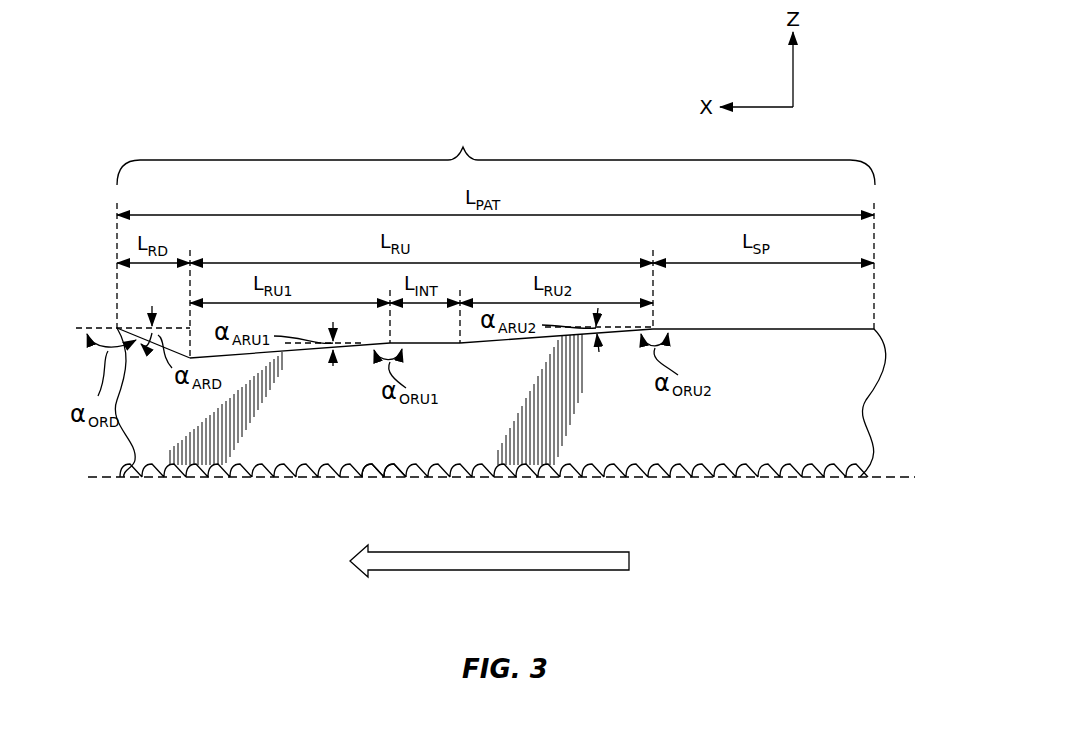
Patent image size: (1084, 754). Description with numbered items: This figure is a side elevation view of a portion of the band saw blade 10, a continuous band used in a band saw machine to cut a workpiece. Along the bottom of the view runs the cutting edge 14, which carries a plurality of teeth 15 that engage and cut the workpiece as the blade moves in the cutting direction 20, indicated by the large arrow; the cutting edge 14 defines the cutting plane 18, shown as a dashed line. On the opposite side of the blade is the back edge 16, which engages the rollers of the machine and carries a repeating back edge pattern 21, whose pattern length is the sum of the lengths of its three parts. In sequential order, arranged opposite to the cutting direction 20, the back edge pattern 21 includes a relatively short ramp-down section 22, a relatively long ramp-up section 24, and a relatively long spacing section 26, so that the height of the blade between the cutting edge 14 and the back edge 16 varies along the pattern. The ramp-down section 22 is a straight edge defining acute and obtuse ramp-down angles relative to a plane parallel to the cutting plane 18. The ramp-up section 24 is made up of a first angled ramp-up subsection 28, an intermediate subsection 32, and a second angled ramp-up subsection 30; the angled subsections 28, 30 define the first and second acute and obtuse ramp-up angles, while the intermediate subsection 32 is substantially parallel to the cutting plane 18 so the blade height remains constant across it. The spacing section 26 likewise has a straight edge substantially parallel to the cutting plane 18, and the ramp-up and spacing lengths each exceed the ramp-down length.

The band saw blade 10 is at (789, 394).
The cutting edge 14 is at (289, 479).
The teeth 15 is at (398, 520).
The back edge 16 is at (806, 328).
The cutting plane 18 is at (735, 480).
The cutting direction 20 is at (528, 571).
The back edge pattern 21 is at (496, 152).
The ramp-down section 22 is at (150, 383).
The ramp-up section 24 is at (450, 398).
The spacing section 26 is at (751, 354).
The first angled ramp-up subsection 28 is at (291, 364).
The second angled ramp-up subsection 30 is at (546, 348).
The intermediate subsection 32 is at (438, 352).